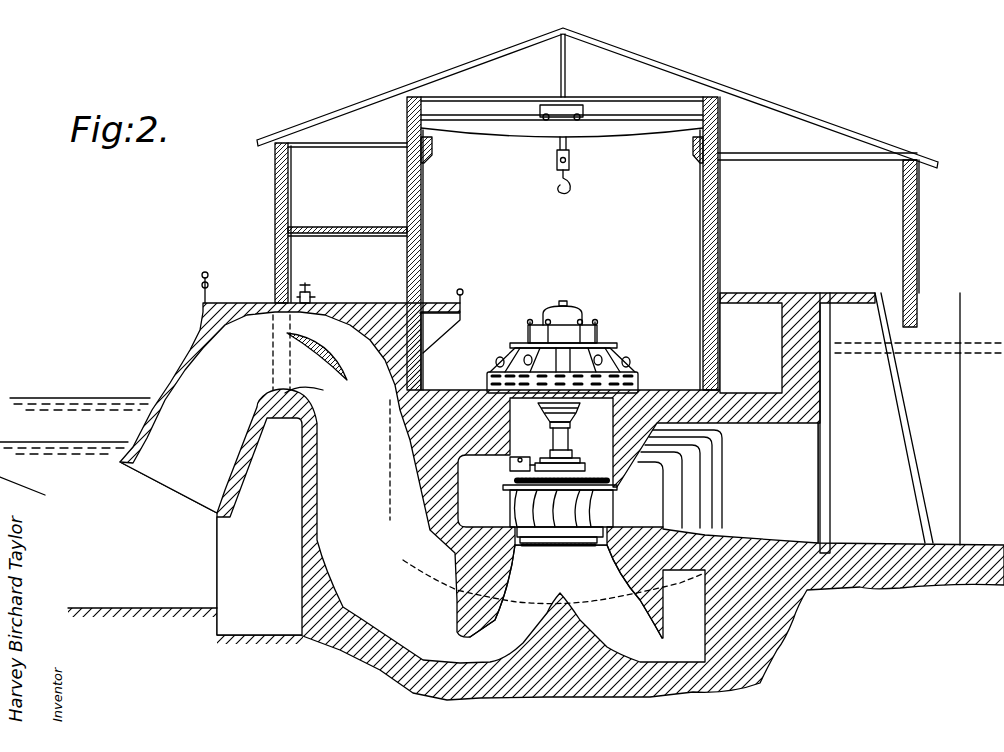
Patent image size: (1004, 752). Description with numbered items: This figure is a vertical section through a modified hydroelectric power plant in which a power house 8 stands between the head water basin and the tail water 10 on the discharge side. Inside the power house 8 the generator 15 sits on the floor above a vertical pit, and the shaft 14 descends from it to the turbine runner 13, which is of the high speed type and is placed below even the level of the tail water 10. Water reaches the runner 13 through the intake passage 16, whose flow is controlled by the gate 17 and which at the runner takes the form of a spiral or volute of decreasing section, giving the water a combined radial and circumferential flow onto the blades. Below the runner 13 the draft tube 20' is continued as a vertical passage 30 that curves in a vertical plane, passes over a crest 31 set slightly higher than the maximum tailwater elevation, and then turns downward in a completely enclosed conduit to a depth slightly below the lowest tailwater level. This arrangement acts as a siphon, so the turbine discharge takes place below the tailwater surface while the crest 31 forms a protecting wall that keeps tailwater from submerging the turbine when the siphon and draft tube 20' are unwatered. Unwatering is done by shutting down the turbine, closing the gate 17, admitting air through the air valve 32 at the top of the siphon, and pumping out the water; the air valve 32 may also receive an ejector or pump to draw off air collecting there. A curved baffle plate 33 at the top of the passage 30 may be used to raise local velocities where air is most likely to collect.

The power house 8 is at (877, 228).
The tail water 10 is at (100, 402).
The runner 13 is at (598, 510).
The shaft 14 is at (568, 435).
The generator 15 is at (617, 358).
The passage 16 is at (731, 419).
The gate 17 is at (826, 440).
The draft tube 20' is at (566, 591).
The vertical passage 30 is at (562, 496).
The crest 31 is at (323, 389).
The air valve 32 is at (312, 290).
The curved baffle plate 33 is at (305, 345).